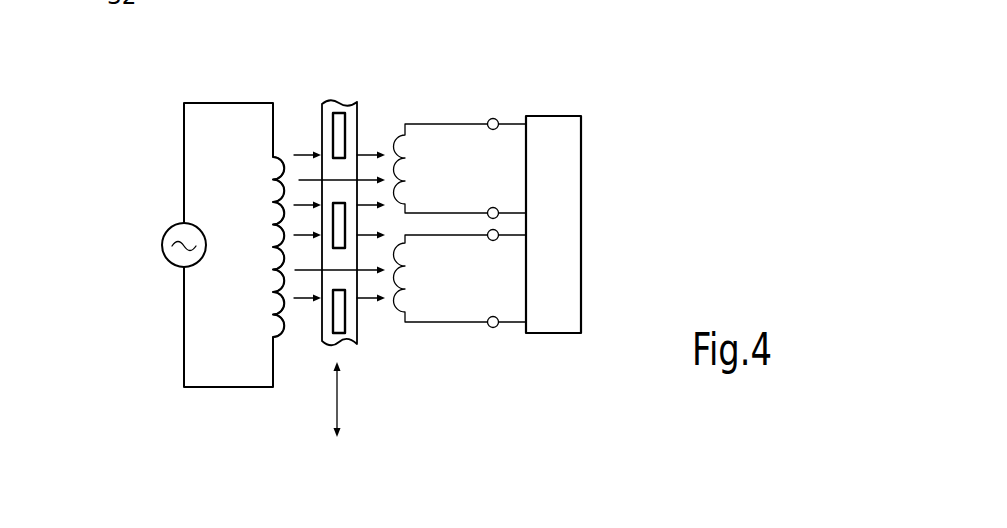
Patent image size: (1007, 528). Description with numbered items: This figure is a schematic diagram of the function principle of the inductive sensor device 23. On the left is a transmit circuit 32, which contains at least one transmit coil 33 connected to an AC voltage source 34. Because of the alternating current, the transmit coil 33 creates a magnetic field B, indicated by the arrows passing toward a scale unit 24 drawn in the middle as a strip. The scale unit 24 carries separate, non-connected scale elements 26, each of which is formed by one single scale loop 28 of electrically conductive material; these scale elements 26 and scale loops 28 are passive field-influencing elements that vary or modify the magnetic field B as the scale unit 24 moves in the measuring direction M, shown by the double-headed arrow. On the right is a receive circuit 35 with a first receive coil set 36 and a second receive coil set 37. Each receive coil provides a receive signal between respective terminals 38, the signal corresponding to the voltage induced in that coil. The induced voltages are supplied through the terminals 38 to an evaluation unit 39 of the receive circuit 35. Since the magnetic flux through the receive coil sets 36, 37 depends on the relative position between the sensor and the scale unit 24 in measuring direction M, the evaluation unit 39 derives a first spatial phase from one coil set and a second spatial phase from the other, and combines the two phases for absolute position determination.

The inductive sensor device 23 is at (649, 145).
The scale unit 24 is at (354, 92).
The scale element 26 is at (343, 130).
The scale loop 28 is at (339, 223).
The transmit circuit 32 is at (185, 95).
The transmit coil 33 is at (283, 182).
The AC voltage source 34 is at (162, 238).
The receive circuit 35 is at (505, 85).
The first receive coil set 36 is at (395, 141).
The second receive coil set 37 is at (395, 248).
The terminals 38 is at (497, 120).
The evaluation unit 39 is at (567, 286).
The magnetic field B is at (307, 155).
The measuring direction M is at (338, 390).